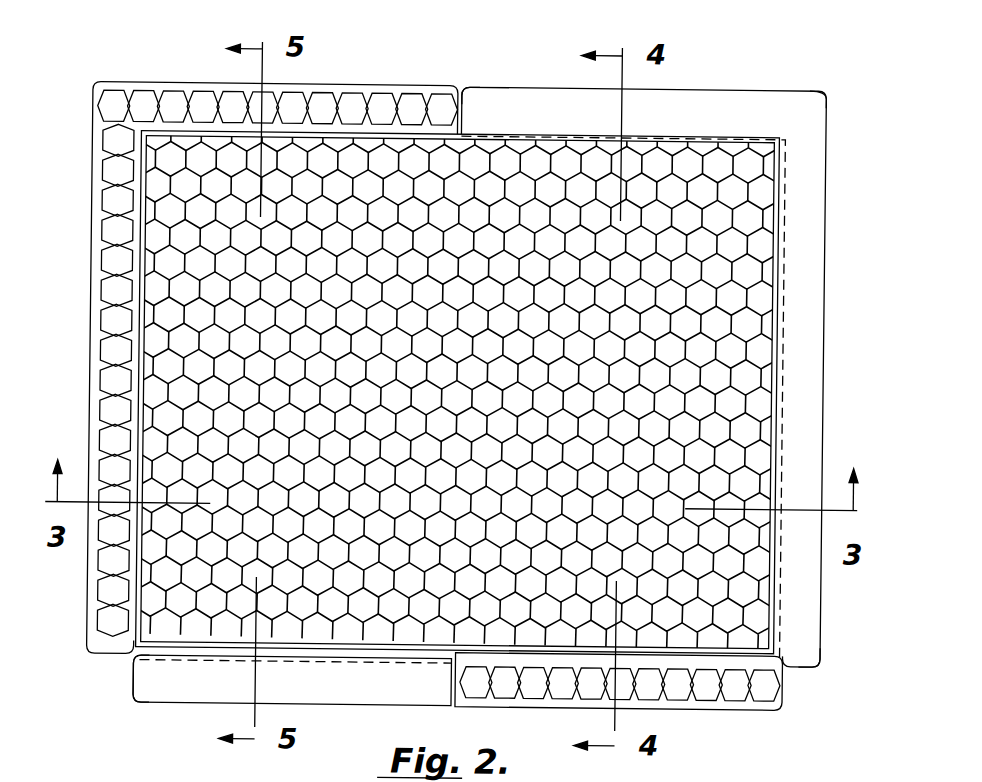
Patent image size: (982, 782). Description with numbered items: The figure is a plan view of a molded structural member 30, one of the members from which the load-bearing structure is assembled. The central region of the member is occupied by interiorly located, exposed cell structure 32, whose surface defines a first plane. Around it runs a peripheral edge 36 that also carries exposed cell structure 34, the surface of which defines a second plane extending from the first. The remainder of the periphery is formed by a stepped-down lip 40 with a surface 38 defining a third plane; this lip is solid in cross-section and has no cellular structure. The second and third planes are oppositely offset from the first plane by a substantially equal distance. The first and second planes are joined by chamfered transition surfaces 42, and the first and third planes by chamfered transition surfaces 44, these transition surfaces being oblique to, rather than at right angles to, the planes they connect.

The molded structural member 30 is at (105, 56).
The exposed cell structure 32 is at (188, 318).
The exposed cell structure 34 is at (388, 96).
The peripheral edge 36 is at (434, 392).
The surface 38 is at (472, 382).
The stepped-down lip 40 is at (768, 90).
The chamfered transition surfaces 42 is at (458, 393).
The chamfered transition surfaces 44 is at (490, 130).